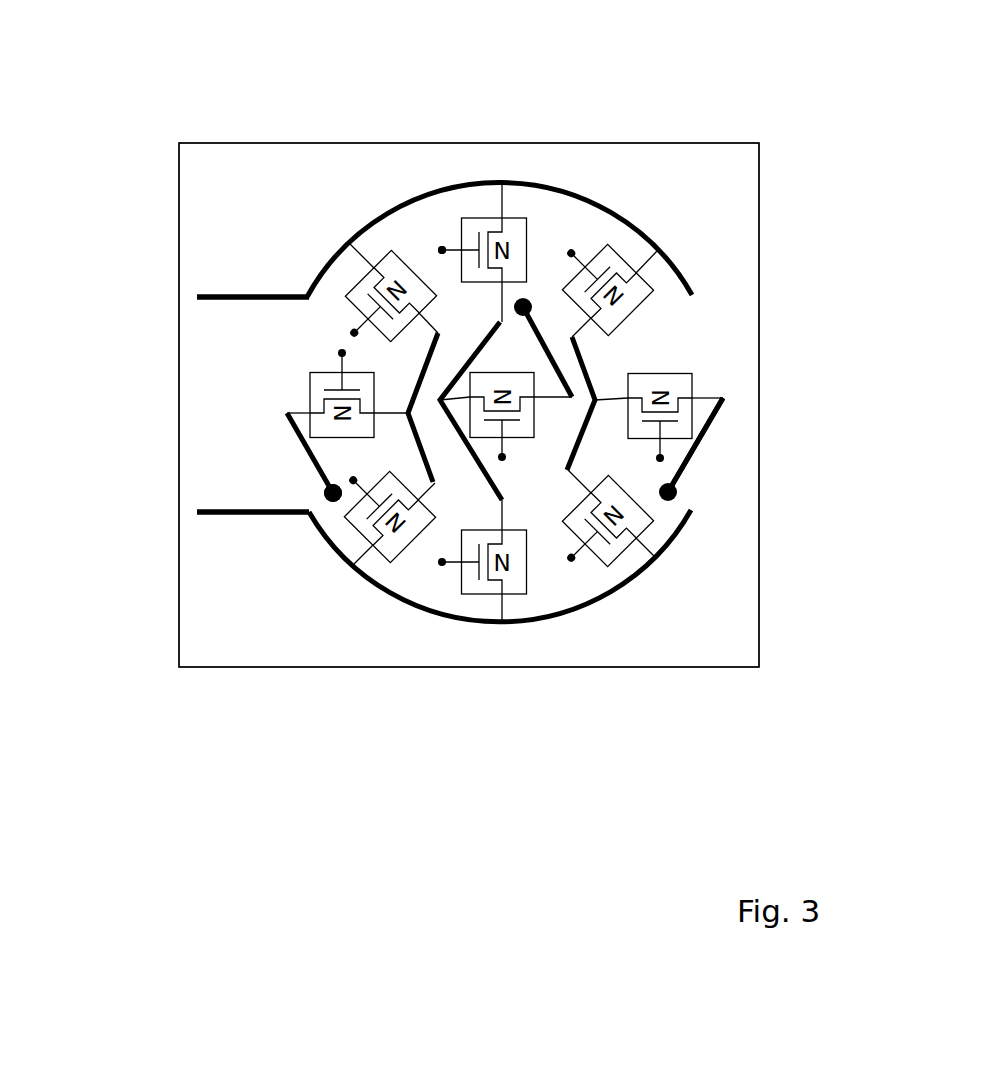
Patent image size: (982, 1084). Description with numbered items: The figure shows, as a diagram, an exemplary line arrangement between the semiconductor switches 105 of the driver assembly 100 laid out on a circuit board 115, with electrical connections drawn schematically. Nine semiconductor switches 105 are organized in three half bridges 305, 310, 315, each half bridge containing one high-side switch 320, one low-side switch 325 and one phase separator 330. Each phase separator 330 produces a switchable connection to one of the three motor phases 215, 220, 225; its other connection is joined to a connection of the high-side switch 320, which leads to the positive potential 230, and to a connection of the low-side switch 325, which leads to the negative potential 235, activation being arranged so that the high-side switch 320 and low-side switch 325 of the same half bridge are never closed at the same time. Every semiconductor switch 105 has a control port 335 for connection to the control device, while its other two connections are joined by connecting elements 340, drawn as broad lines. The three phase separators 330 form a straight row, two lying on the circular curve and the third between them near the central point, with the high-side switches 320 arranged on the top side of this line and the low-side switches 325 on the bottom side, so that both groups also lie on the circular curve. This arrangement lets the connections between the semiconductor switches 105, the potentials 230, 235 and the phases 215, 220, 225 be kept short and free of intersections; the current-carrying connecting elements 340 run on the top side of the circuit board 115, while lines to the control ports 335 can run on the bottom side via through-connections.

The driver assembly 100 is at (298, 133).
The semiconductor switch 105 is at (376, 265).
The circuit board 115 is at (532, 143).
The phase 220 is at (528, 302).
The control port 335 is at (437, 238).
The connecting element 340 is at (253, 298).
The positive potential 230 is at (168, 297).
The negative potential 235 is at (168, 512).
The phase 215 is at (327, 498).
The phase 225 is at (677, 490).
The high-side switch 320 is at (770, 293).
The phase separator 330 is at (770, 395).
The low-side switch 325 is at (770, 505).
The half bridge 305 is at (385, 680).
The half bridge 310 is at (499, 680).
The half bridge 315 is at (615, 680).